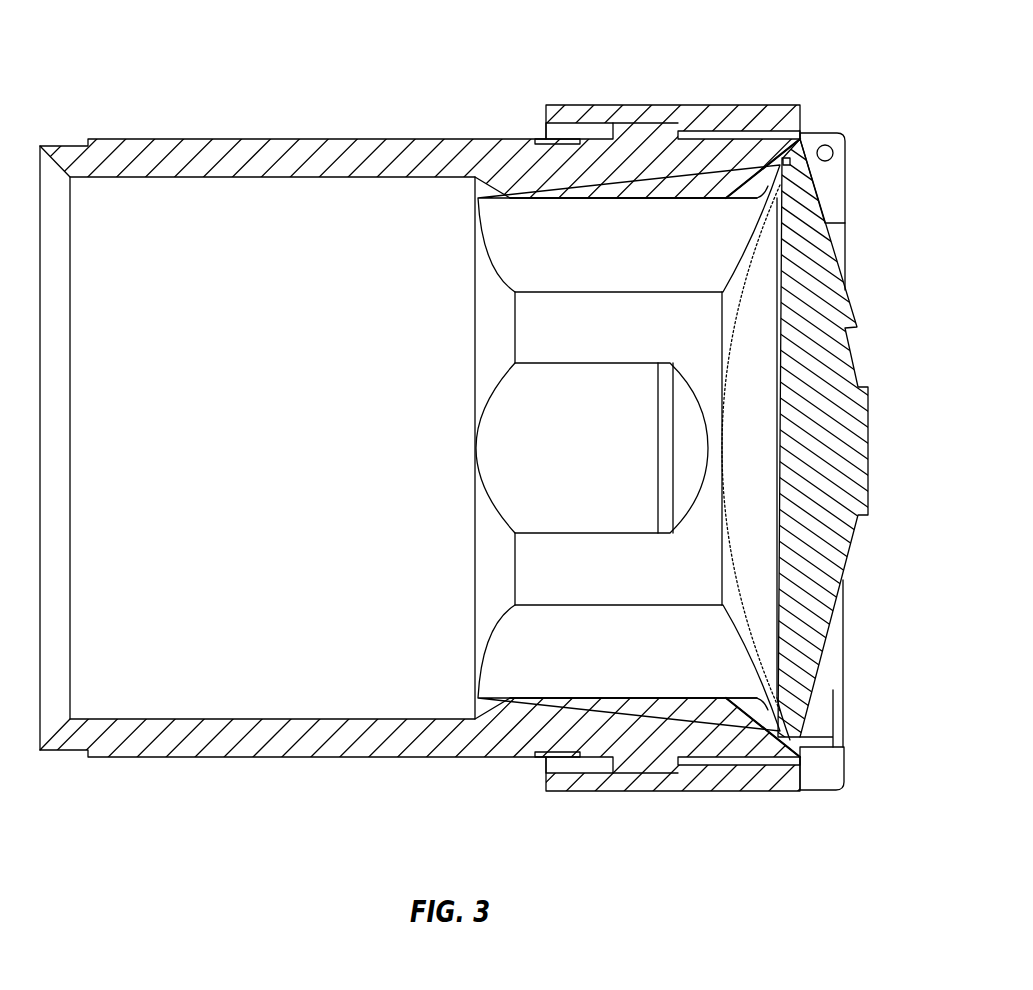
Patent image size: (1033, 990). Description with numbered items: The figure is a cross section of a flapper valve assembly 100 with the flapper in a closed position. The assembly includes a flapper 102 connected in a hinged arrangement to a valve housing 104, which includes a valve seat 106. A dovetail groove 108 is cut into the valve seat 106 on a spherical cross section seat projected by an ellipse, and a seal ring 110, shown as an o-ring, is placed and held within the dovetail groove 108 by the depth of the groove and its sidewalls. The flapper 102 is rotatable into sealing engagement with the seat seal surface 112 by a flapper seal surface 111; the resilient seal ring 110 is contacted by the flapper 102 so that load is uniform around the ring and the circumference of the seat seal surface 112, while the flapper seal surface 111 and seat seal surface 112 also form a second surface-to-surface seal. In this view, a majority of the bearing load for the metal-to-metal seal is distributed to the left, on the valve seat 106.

The flapper valve assembly 100 is at (193, 45).
The flapper 102 is at (826, 565).
The valve housing 104 is at (178, 759).
The valve seat 106 is at (757, 196).
The dovetail groove 108 is at (786, 158).
The seal ring 110 is at (816, 791).
The flapper seal surface 111 is at (803, 146).
The seat seal surface 112 is at (773, 701).